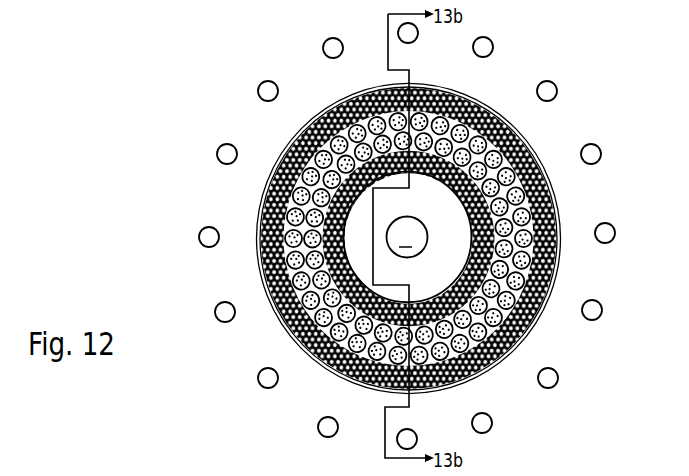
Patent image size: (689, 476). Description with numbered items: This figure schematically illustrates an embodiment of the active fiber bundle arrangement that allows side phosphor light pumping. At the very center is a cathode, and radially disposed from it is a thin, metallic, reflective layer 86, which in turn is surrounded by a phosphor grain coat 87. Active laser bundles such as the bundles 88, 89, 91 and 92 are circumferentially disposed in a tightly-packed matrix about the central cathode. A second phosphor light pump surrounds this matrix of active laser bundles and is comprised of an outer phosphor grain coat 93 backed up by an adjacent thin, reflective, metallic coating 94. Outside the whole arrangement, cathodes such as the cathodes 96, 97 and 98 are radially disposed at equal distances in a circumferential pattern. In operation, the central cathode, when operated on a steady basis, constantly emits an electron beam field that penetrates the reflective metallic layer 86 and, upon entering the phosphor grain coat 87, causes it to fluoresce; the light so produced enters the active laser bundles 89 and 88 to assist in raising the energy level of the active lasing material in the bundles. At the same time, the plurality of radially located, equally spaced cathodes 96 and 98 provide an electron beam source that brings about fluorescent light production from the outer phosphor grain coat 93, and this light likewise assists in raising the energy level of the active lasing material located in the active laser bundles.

The reflective metallic layer 86 is at (460, 196).
The phosphor grain coat 87 is at (340, 248).
The active laser bundle 88 is at (395, 100).
The active laser bundle 89 is at (362, 100).
The active laser bundle 91 is at (343, 366).
The active laser bundle 92 is at (347, 381).
The outer phosphor grain coat 93 is at (518, 135).
The reflective metallic coating 94 is at (530, 152).
The cathode 96 is at (416, 40).
The cathode 97 is at (615, 232).
The cathode 98 is at (415, 431).